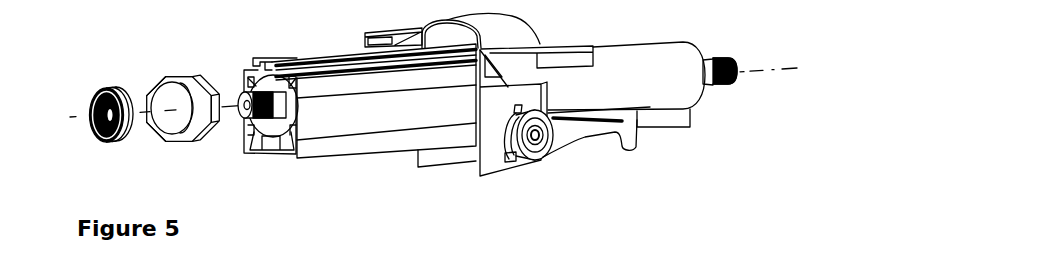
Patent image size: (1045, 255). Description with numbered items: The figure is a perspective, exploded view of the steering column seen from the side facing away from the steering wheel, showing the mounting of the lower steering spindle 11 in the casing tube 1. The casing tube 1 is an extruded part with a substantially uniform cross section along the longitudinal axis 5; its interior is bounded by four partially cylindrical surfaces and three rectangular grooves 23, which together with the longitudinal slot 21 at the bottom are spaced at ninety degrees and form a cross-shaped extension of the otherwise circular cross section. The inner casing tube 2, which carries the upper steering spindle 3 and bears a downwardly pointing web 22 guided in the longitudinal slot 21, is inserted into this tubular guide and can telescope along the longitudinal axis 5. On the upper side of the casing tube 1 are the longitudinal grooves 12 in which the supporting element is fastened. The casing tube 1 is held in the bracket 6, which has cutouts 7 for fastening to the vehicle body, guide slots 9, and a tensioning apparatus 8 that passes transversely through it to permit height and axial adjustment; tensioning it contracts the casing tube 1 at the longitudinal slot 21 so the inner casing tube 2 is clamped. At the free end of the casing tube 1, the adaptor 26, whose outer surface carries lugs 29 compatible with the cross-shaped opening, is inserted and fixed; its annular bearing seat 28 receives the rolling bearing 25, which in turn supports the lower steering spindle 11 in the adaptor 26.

The casing tube 1 is at (430, 140).
The inner casing tube 2 is at (690, 82).
The upper steering spindle 3 is at (710, 77).
The longitudinal axis 5 is at (785, 69).
The bracket 6 is at (512, 33).
The cutouts 7 is at (570, 50).
The tensioning apparatus 8 is at (539, 160).
The guide slots 9 is at (503, 112).
The lower steering spindle 11 is at (276, 105).
The longitudinal grooves 12 is at (358, 77).
The longitudinal slot 21 is at (265, 150).
The web 22 is at (673, 120).
The rectangular grooves 23 is at (270, 62).
The rolling bearing 25 is at (127, 133).
The adaptor 26 is at (198, 84).
The bearing seat 28 is at (175, 130).
The lugs 29 is at (148, 98).